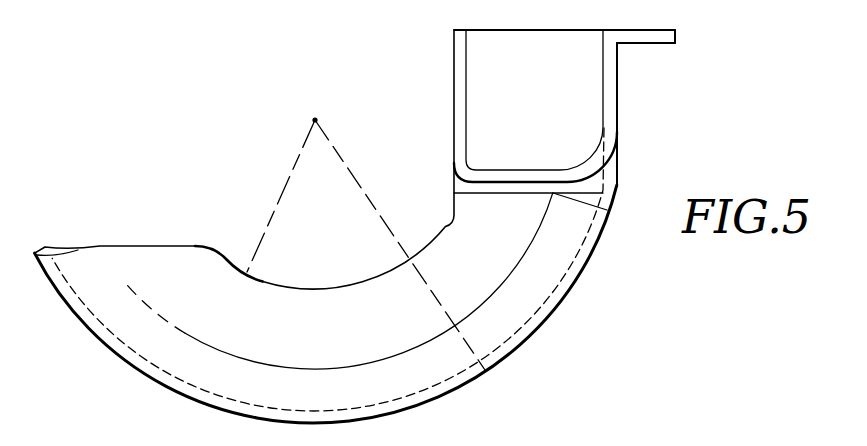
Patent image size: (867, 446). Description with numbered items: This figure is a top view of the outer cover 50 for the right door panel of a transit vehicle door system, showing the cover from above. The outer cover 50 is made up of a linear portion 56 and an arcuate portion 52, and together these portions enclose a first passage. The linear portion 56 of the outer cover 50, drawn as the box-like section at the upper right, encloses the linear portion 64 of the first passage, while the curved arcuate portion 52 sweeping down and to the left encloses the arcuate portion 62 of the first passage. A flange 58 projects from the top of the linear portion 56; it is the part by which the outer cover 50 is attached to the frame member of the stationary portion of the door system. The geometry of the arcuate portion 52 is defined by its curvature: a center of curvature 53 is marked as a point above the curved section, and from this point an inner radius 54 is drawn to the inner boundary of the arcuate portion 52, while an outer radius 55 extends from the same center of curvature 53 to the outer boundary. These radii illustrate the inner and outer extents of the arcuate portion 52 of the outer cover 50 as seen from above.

The outer cover 50 is at (176, 142).
The arcuate portion 52 is at (336, 347).
The center of curvature 53 is at (315, 118).
The inner radius 54 is at (283, 193).
The outer radius 55 is at (361, 185).
The linear portion 56 is at (617, 100).
The flange 58 is at (652, 30).
The arcuate portion of first passage 62 is at (155, 257).
The linear portion of first passage 64 is at (544, 111).